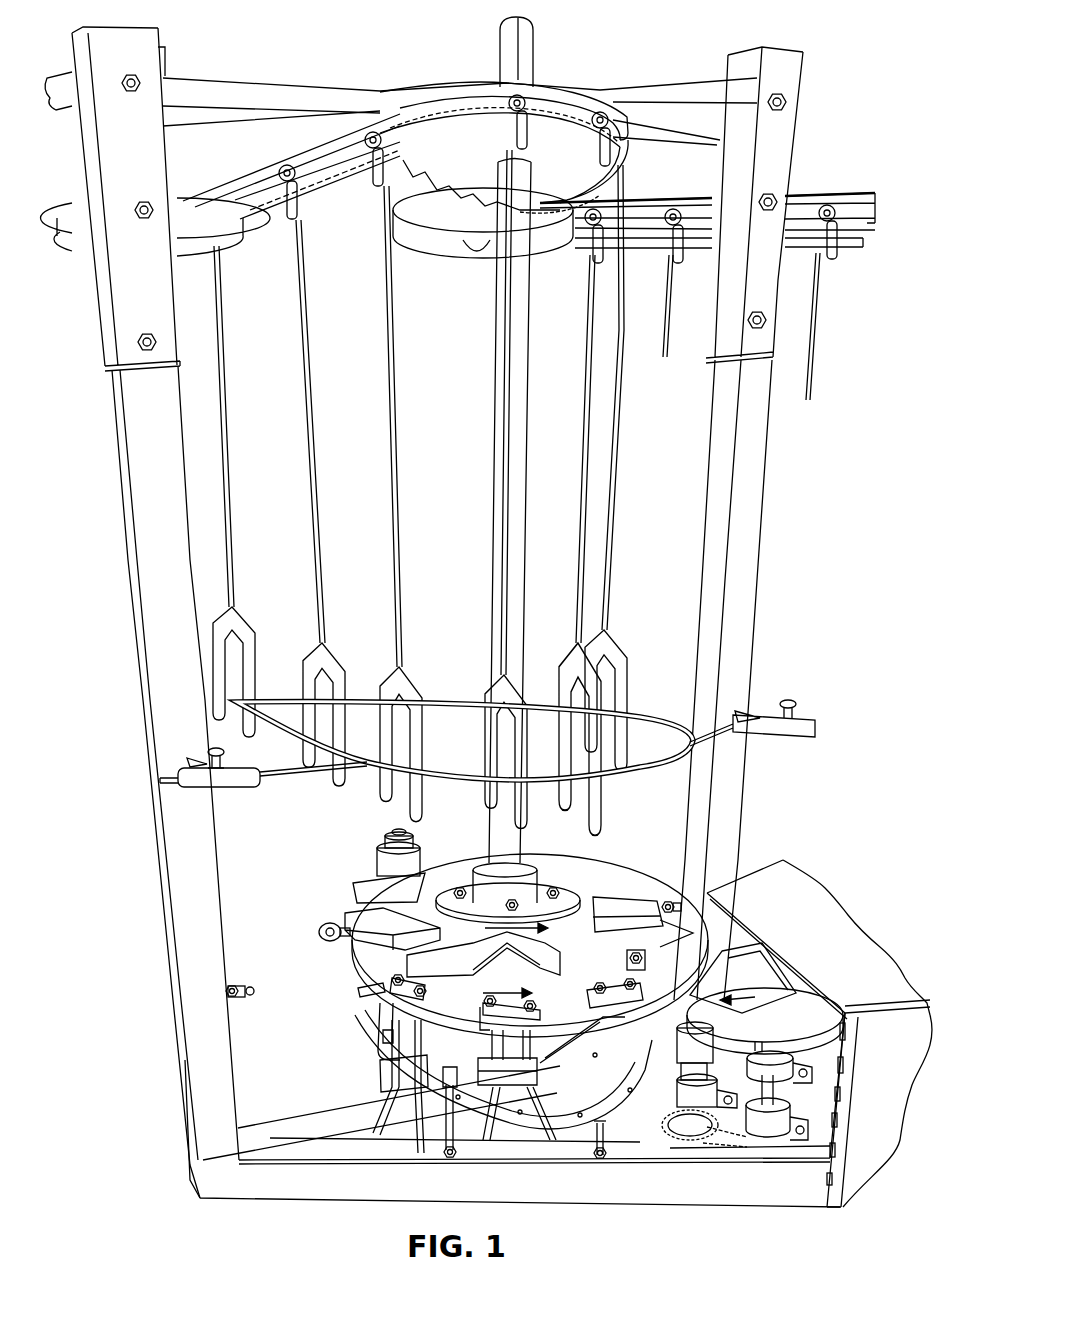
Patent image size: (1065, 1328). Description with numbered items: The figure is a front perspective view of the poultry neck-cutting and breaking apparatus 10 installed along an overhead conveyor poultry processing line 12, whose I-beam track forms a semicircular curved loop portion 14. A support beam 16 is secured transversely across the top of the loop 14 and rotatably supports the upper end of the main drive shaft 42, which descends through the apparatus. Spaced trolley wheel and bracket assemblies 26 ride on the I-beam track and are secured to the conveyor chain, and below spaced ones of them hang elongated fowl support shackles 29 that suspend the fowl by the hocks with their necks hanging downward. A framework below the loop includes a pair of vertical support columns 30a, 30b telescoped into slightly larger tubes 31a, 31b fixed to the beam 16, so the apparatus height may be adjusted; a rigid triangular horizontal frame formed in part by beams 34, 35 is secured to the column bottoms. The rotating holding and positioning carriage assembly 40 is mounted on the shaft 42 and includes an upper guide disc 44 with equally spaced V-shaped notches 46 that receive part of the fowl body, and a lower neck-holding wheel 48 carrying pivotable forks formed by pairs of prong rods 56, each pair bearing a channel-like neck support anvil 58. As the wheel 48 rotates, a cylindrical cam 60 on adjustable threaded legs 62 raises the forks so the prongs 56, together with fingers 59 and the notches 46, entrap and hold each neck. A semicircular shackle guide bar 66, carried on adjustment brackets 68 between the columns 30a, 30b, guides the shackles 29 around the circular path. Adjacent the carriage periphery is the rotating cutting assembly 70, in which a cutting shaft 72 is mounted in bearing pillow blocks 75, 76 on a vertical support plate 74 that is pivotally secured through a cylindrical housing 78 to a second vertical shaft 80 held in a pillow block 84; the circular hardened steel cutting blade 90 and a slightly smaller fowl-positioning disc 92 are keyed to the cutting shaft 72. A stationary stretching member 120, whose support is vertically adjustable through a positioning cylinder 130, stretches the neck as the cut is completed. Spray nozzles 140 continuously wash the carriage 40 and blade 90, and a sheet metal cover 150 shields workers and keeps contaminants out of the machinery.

The poultry processing apparatus 10 is at (803, 477).
The overhead conveyor poultry processing line 12 is at (475, 78).
The curved loop portion 14 is at (550, 103).
The support beam 16 is at (248, 87).
The trolley wheel and bracket assemblies 26 is at (282, 165).
The fowl support shackles 29 is at (234, 543).
The support column 30a is at (165, 737).
The support column 30b is at (745, 613).
The tube 31a is at (158, 266).
The tube 31b is at (782, 272).
The frame beam 34 is at (303, 1185).
The frame beam 35 is at (287, 1127).
The holding and positioning carriage assembly 40 is at (318, 872).
The main drive shaft 42 is at (522, 482).
The upper guide wheel or disc 44 is at (565, 870).
The V-shaped notches or recesses 46 is at (430, 940).
The neck-holding disc or wheel 48 is at (578, 1004).
The prong rods 56 is at (419, 1150).
The neck support member or anvil 58 is at (530, 1070).
The fingers 59 is at (360, 988).
The cam 60 is at (628, 1100).
The adjustable legs 62 is at (606, 1132).
The shackle guide bar 66 is at (638, 773).
The adjustment brackets 68 is at (203, 790).
The rotating cutting assembly 70 is at (805, 987).
The cutting shaft 72 is at (776, 1098).
The vertical support plate 74 is at (741, 1076).
The bearing pillow block 75 is at (787, 1068).
The bearing pillow block 76 is at (773, 1132).
The cylindrical housing 78 is at (705, 1060).
The second vertical shaft 80 is at (675, 1117).
The bearing pillow block 84 is at (703, 1107).
The cutting blade 90 is at (758, 996).
The fowl-positioning disc 92 is at (809, 1033).
The stretching member 120 is at (698, 922).
The positioning cylinder 130 is at (377, 867).
The spray nozzles 140 is at (320, 922).
The cover 150 is at (827, 927).